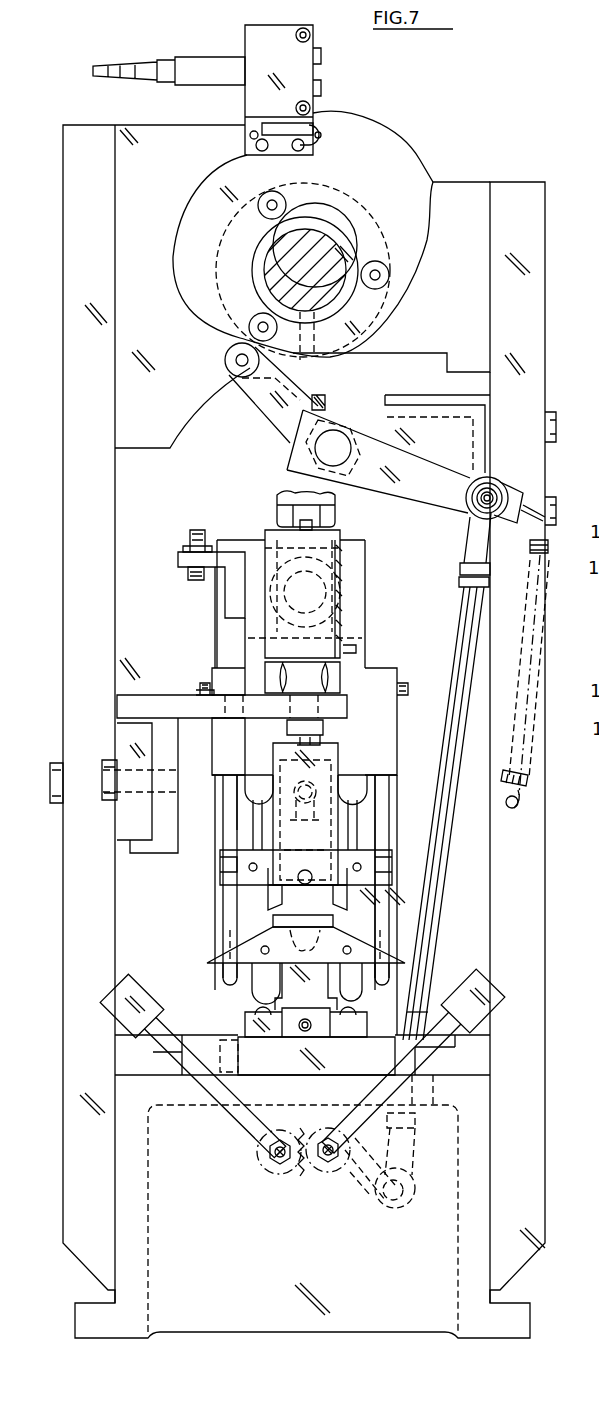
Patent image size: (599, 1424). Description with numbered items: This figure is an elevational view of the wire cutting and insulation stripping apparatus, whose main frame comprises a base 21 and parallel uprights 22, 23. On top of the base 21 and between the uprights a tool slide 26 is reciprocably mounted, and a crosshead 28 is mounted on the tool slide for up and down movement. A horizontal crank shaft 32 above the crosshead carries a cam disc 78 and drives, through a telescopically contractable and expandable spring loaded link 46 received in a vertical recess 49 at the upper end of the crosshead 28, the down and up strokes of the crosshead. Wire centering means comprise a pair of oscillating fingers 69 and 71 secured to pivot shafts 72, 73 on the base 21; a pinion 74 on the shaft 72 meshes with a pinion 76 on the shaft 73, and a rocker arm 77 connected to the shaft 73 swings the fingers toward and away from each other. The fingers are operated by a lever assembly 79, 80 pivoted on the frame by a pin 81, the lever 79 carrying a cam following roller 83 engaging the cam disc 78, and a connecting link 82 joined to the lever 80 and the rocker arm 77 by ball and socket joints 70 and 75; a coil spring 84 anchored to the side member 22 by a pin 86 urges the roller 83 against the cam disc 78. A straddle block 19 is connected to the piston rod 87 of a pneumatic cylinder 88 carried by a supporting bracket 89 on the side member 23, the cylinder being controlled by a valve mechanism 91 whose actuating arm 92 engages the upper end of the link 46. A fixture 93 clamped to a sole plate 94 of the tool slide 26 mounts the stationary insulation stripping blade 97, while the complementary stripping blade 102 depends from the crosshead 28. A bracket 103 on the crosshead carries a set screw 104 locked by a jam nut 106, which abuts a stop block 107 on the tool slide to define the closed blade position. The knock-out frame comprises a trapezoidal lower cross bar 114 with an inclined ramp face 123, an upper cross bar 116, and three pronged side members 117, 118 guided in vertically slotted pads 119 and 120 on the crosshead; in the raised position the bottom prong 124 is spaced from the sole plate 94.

The straddle block 19 is at (283, 899).
The base 21 is at (487, 1207).
The upright 22 is at (537, 867).
The upright 23 is at (68, 703).
The tool slide 26 is at (395, 810).
The crosshead 28 is at (365, 575).
The crank shaft 32 is at (252, 272).
The spring loaded link 46 is at (277, 495).
The vertical recess 49 is at (353, 637).
The oscillating finger 69 is at (205, 1093).
The ball and socket joint 70 is at (495, 485).
The oscillating finger 71 is at (433, 1057).
The pivot shaft 72 is at (272, 1170).
The pivot shaft 73 is at (337, 1172).
The pinion 74 is at (253, 1148).
The ball and socket joint 75 is at (407, 1205).
The pinion 76 is at (313, 1172).
The rocker arm 77 is at (358, 1195).
The cam disc 78 is at (417, 275).
The lever 79 is at (265, 405).
The lever 80 is at (400, 490).
The pin 81 is at (336, 437).
The connecting link 82 is at (468, 598).
The cam following roller 83 is at (225, 347).
The coil spring 84 is at (503, 777).
The pin 86 is at (512, 809).
The piston rod 87 is at (318, 733).
The pneumatic cylinder 88 is at (270, 628).
The supporting bracket 89 is at (132, 700).
The valve mechanism 91 is at (278, 30).
The actuating arm 92 is at (318, 125).
The fixture 93 is at (310, 1035).
The sole plate 94 is at (363, 1066).
The insulation stripping blade 97 is at (290, 985).
The insulation stripping blade 102 is at (305, 814).
The bracket 103 is at (178, 557).
The set screw 104 is at (200, 530).
The jam nut 106 is at (186, 550).
The stop block 107 is at (192, 683).
The lower cross bar 114 is at (245, 943).
The upper cross bar 116 is at (222, 880).
The side member 117 is at (382, 907).
The side member 118 is at (223, 907).
The vertically slotted pad 119 is at (377, 668).
The vertically slotted pad 120 is at (233, 765).
The ramp face 123 is at (215, 955).
The bottom prong 124 is at (385, 973).